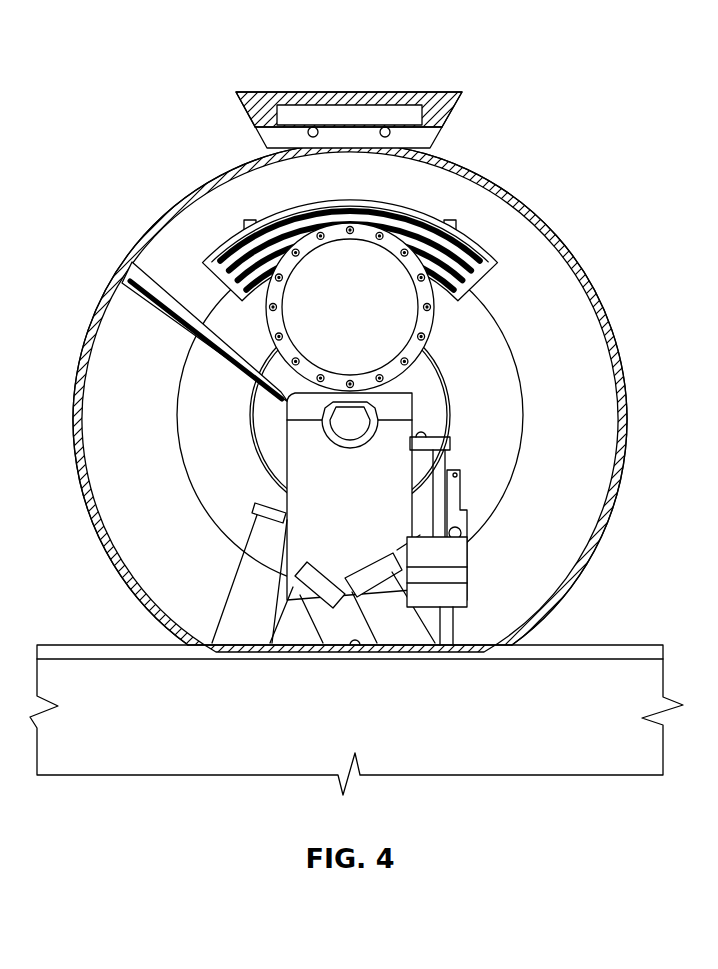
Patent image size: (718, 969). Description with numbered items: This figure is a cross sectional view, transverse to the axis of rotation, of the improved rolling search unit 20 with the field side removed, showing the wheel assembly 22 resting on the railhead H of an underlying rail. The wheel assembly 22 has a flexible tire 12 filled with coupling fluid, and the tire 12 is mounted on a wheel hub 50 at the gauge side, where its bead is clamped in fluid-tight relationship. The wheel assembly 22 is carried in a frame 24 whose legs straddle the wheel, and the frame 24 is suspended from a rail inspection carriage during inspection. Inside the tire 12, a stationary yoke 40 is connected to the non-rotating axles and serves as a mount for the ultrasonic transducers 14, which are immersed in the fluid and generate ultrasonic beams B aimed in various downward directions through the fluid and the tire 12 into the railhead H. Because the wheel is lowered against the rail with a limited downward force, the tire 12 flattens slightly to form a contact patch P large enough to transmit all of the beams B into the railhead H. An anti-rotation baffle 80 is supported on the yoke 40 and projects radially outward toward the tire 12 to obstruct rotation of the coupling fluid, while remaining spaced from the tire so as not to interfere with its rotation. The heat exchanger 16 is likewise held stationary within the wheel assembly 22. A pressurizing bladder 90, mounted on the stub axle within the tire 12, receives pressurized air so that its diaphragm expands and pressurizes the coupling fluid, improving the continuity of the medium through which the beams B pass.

The tire 12 is at (631, 421).
The ultrasonic transducers 14 is at (363, 578).
The heat exchanger 16 is at (463, 229).
The rolling search unit 20 is at (147, 179).
The wheel assembly 22 is at (559, 236).
The frame 24 is at (390, 92).
The yoke 40 is at (314, 483).
The wheel hub 50 is at (485, 318).
The anti-rotation baffle 80 is at (143, 288).
The pressurizing bladder 90 is at (337, 318).
The ultrasonic beams B is at (290, 630).
The contact patch P is at (355, 648).
The railhead H is at (616, 654).